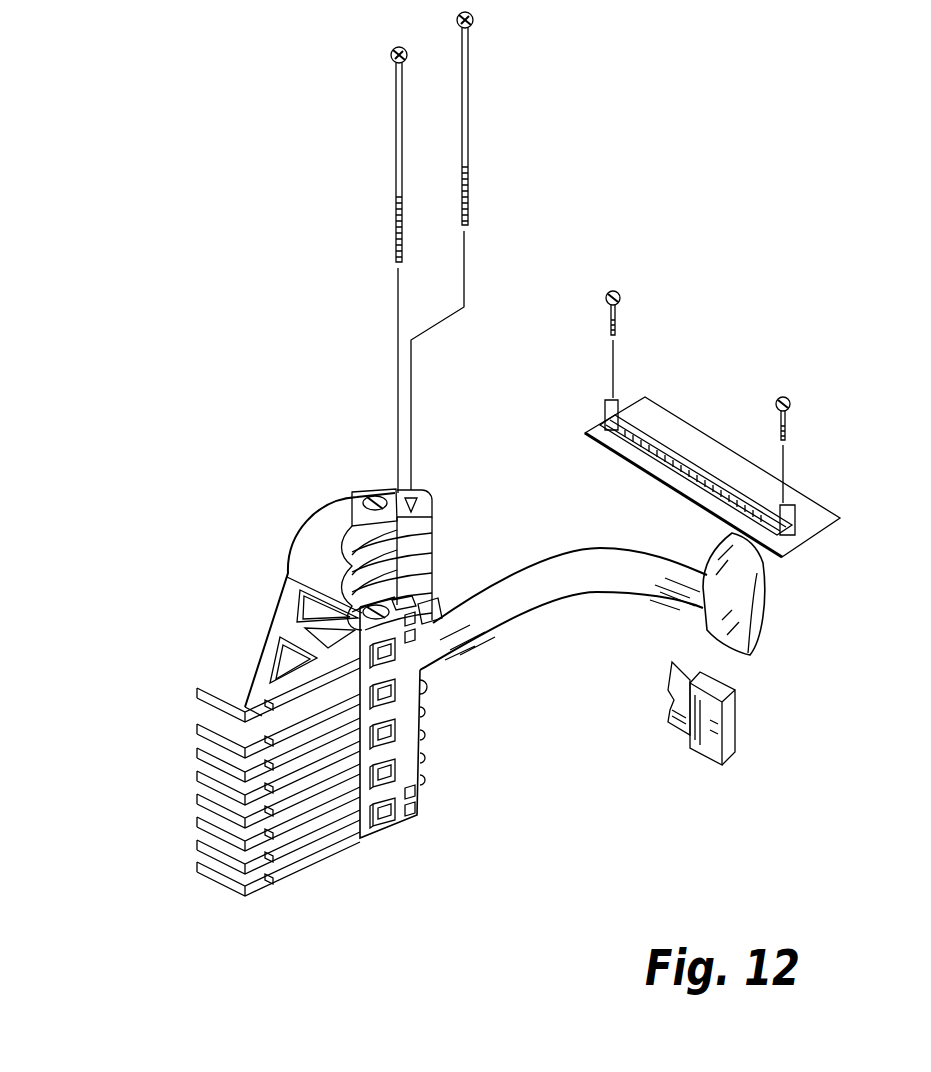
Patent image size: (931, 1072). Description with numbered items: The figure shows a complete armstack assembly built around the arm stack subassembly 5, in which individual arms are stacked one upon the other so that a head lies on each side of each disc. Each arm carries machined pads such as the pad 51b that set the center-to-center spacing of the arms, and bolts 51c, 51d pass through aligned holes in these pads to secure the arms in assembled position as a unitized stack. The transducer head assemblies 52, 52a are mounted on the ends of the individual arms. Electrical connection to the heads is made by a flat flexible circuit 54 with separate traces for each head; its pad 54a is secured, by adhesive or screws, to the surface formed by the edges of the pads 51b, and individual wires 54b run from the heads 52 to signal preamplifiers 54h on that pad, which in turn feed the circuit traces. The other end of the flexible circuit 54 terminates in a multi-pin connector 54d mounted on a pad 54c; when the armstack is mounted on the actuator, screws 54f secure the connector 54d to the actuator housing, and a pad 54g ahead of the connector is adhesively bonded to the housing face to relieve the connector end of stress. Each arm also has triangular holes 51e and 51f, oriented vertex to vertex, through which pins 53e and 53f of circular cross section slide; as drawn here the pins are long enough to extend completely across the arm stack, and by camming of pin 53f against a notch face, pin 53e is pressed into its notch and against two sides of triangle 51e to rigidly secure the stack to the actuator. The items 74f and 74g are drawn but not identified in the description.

The arm stack subassembly 5 is at (320, 505).
The pad 51b is at (414, 605).
The bolt 51c is at (365, 488).
The bolt 51d is at (360, 600).
The triangular hole 51e is at (413, 489).
The triangular hole 51f is at (404, 596).
The transducer head assembly 52 is at (241, 755).
The transducer head assembly 52a is at (234, 688).
The pin 53e is at (472, 82).
The pin 53f is at (392, 140).
The flat flexible circuit 54 is at (646, 602).
The pad 54a is at (434, 717).
The wire 54b is at (302, 868).
The pad 54c is at (702, 512).
The multi-pin connector 54d is at (641, 455).
The screw 54f is at (620, 291).
The pad 54g is at (766, 630).
The signal preamplifier 54h is at (397, 746).
The insulating sheet 74f is at (672, 730).
The block 74g is at (722, 770).